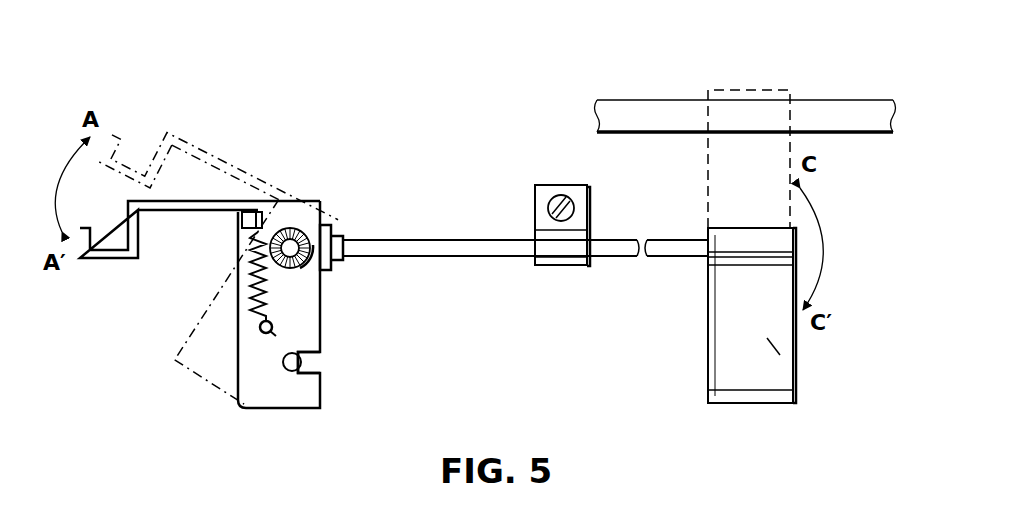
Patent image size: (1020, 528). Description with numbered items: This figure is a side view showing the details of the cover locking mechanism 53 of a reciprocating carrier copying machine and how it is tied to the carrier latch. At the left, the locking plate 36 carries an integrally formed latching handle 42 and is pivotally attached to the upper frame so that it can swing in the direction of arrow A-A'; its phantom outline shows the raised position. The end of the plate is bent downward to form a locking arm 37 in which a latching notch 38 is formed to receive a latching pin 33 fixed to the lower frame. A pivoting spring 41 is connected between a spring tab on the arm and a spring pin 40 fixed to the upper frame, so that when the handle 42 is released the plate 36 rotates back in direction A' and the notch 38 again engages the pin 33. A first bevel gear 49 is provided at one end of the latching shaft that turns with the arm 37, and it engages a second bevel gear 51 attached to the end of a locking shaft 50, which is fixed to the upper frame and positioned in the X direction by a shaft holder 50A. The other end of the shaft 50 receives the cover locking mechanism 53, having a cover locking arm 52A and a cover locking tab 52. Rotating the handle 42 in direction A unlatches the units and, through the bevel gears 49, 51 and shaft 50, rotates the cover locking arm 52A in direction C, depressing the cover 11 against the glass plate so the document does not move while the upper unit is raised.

The cover and glass plate 11 is at (836, 100).
The latching pin 33 is at (300, 372).
The locking plate 36 is at (207, 196).
The locking arm 37 is at (282, 395).
The latching notch 38 is at (302, 364).
The spring pin 40 is at (275, 331).
The pivoting spring 41 is at (255, 262).
The latching handle 42 is at (100, 255).
The first bevel gear 49 is at (300, 228).
The locking shaft 50 is at (487, 240).
The shaft holder 50A is at (558, 268).
The second bevel gear 51 is at (333, 235).
The cover locking tab 52 is at (750, 90).
The cover locking arm 52A is at (722, 327).
The cover locking mechanism 53 is at (770, 342).